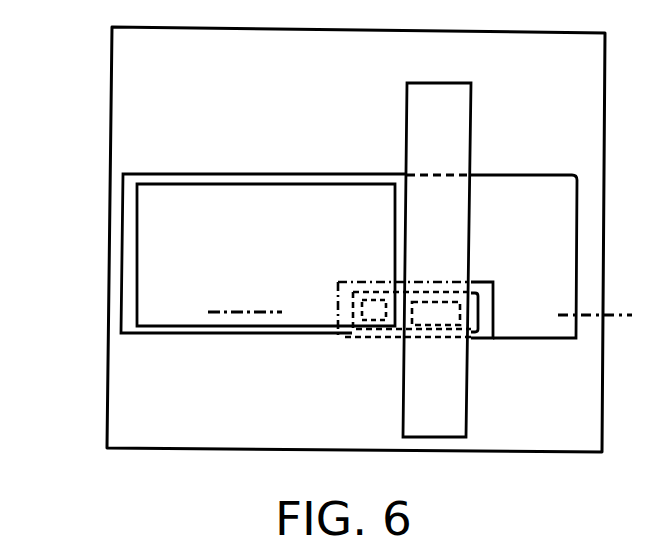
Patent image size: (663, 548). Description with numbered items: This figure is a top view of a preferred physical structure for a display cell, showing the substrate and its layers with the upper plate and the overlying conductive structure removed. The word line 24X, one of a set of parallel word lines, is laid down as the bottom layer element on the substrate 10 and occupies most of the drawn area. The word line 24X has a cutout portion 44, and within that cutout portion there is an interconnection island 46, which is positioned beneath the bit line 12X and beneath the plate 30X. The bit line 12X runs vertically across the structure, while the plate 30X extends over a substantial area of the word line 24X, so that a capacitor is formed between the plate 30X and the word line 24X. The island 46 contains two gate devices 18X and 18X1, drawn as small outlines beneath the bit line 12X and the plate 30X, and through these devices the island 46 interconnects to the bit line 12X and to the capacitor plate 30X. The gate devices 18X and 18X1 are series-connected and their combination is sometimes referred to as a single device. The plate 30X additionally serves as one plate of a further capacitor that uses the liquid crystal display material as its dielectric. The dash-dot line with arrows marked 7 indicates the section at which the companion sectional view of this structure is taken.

The substrate 10 is at (284, 133).
The bit line 12X is at (465, 102).
The word line 24X is at (123, 193).
The plate 30X is at (168, 310).
The cutout portion 44 is at (493, 307).
The interconnection island 46 is at (398, 335).
The gate device 18X is at (375, 314).
The gate device 18X1 is at (448, 316).
The section line 7 is at (218, 313).